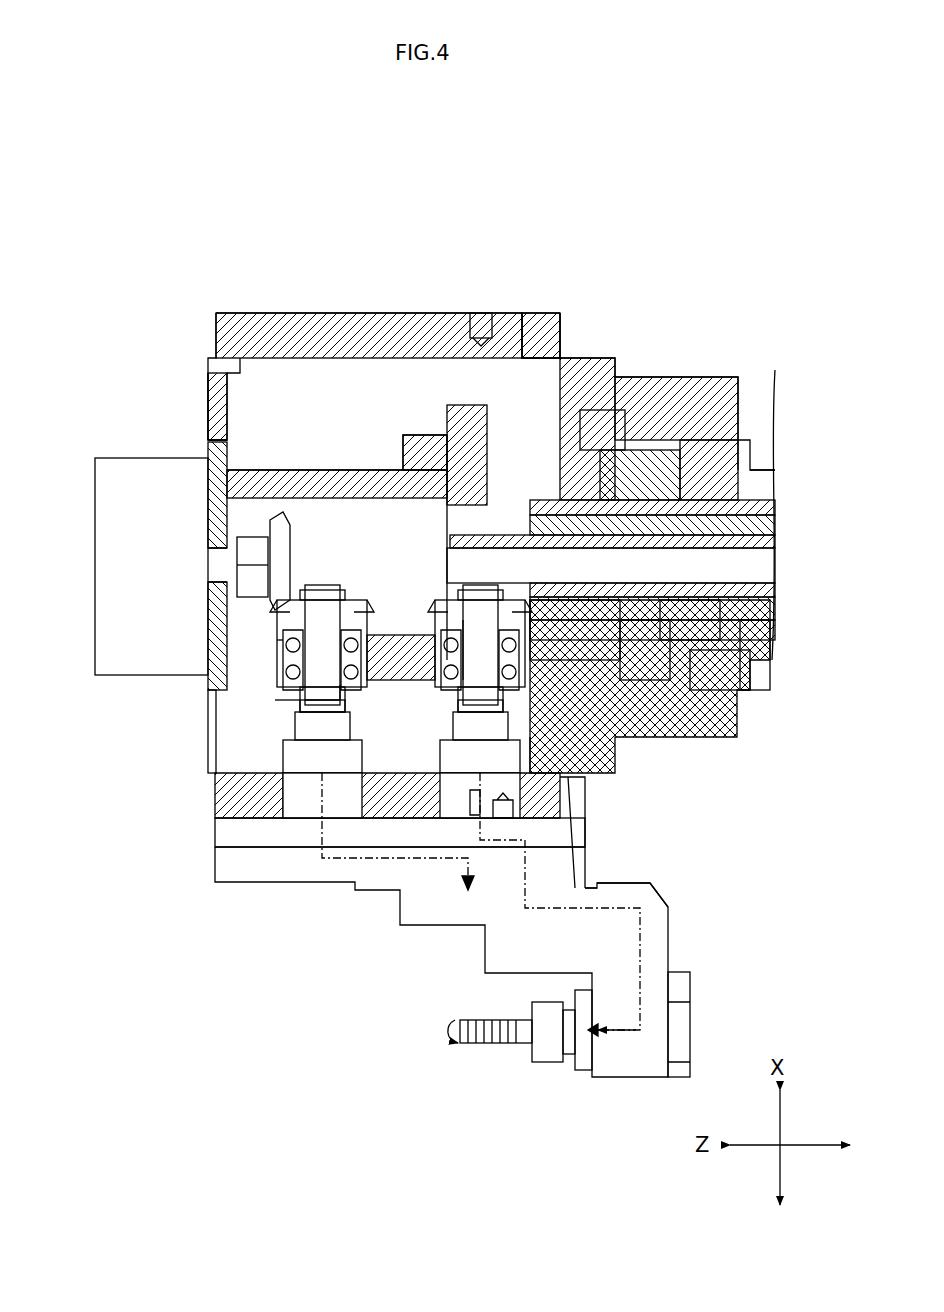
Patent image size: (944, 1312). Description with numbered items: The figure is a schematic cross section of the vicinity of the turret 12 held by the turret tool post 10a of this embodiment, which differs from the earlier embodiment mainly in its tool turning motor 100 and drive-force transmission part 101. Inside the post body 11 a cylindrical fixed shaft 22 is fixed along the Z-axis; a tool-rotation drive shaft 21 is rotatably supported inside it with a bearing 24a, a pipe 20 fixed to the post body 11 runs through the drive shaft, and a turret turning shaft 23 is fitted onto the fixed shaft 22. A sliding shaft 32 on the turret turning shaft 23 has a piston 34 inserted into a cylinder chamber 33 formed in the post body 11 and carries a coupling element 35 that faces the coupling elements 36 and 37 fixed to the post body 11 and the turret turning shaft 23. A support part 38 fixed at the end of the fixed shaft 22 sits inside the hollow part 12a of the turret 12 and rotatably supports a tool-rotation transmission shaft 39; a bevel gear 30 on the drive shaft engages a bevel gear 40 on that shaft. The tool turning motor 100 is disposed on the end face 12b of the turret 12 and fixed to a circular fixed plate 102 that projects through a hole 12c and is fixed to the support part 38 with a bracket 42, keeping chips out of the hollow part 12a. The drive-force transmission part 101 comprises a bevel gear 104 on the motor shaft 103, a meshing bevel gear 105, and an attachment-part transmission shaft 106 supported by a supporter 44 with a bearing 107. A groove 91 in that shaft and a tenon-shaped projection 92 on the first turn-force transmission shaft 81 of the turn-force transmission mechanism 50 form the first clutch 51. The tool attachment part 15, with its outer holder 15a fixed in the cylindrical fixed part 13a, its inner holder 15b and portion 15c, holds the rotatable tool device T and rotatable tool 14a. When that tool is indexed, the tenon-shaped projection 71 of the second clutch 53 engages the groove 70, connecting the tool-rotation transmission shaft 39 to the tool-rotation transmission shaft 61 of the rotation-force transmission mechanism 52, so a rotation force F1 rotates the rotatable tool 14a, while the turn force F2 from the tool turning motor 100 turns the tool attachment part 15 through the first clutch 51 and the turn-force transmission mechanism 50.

The turret tool post 10a is at (590, 295).
The post body 11 is at (684, 356).
The turret 12 is at (300, 290).
The hollow part 12a is at (393, 390).
The end face 12b is at (208, 380).
The hole 12c is at (207, 440).
The fixed part 13a is at (560, 805).
The rotatable tool 14a is at (490, 1045).
The tool attachment part 15 is at (330, 895).
The outer holder 15a is at (215, 885).
The inner holder 15b is at (610, 882).
The base arm 15c is at (640, 893).
The pipe 20 is at (775, 560).
The tool-rotation drive shaft 21 is at (775, 590).
The fixed shaft 22 is at (775, 608).
The turret turning shaft 23 is at (775, 630).
The bearing 24a is at (655, 680).
The bevel gear 30 is at (500, 430).
The sliding shaft 32 is at (760, 470).
The cylinder chamber 33 is at (650, 470).
The piston 34 is at (705, 440).
The coupling element 35 is at (735, 715).
The coupling element 36 is at (600, 460).
The coupling element 37 is at (690, 710).
The support part 38 is at (468, 430).
The tool-rotation transmission shaft 39 is at (560, 700).
The bevel gear 40 is at (615, 690).
The bracket 42 is at (369, 470).
The supporter 44 is at (395, 640).
The turn-force transmission mechanism 50 is at (285, 865).
The first clutch 51 is at (300, 740).
The rotation-force transmission mechanism 52 is at (478, 780).
The second clutch 53 is at (340, 715).
The tool-rotation transmission shaft 61 is at (570, 825).
The groove 70 is at (455, 735).
The tenon-shaped projection 71 is at (480, 685).
The first turn-force transmission shaft 81 is at (290, 800).
The groove 91 is at (320, 720).
The tenon-shaped projection 92 is at (345, 712).
The tool turning motor 100 is at (100, 680).
The drive-force transmission part 101 is at (280, 690).
The fixed plate 102 is at (208, 455).
The motor shaft 103 is at (208, 598).
The bevel gear 104 is at (262, 537).
The bevel gear 105 is at (285, 520).
The attachment-part transmission shaft 106 is at (295, 735).
The bearing 107 is at (245, 670).
The rotatable tool device T is at (672, 925).
The rotation force F1 is at (660, 1000).
The turn force F2 is at (390, 890).